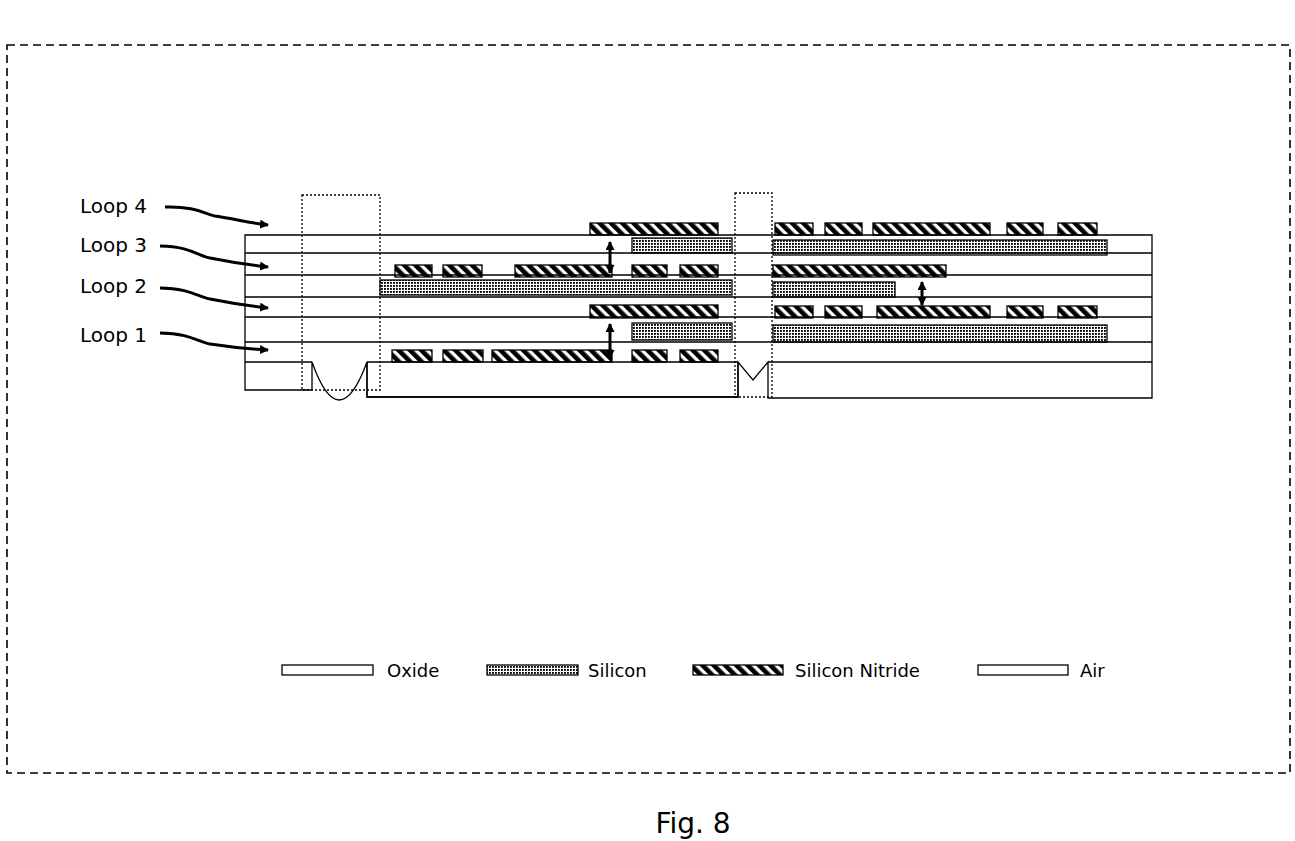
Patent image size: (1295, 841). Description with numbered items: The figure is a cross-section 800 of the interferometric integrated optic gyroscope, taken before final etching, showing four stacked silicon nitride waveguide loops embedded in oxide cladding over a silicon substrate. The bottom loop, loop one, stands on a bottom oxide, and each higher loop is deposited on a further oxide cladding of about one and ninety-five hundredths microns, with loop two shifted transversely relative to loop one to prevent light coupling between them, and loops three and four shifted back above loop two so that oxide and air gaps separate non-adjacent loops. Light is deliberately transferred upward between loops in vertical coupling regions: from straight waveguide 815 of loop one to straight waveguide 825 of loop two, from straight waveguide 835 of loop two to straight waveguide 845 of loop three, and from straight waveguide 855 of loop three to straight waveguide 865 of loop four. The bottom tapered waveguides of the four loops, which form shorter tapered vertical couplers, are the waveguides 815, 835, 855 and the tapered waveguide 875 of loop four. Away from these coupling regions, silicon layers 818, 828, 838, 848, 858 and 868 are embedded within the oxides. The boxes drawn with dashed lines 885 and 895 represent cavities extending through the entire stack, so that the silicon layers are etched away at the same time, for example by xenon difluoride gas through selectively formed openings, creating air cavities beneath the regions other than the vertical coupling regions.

The cross-section 800 is at (1120, 37).
The dashed-line box cavity 885 is at (355, 182).
The dashed-line box cavity 895 is at (753, 188).
The straight waveguide 865 is at (645, 222).
The bottom tapered waveguide 875 is at (886, 222).
The straight waveguide 855 is at (590, 282).
The straight waveguide 825 is at (598, 325).
The straight waveguide 815 is at (608, 366).
The silicon layer 838 is at (652, 254).
The silicon layer 828 is at (673, 296).
The silicon layer 818 is at (718, 335).
The silicon layer 848 is at (800, 340).
The silicon layer 858 is at (824, 290).
The silicon layer 868 is at (844, 258).
The straight waveguide 835 is at (900, 321).
The straight waveguide 845 is at (942, 286).